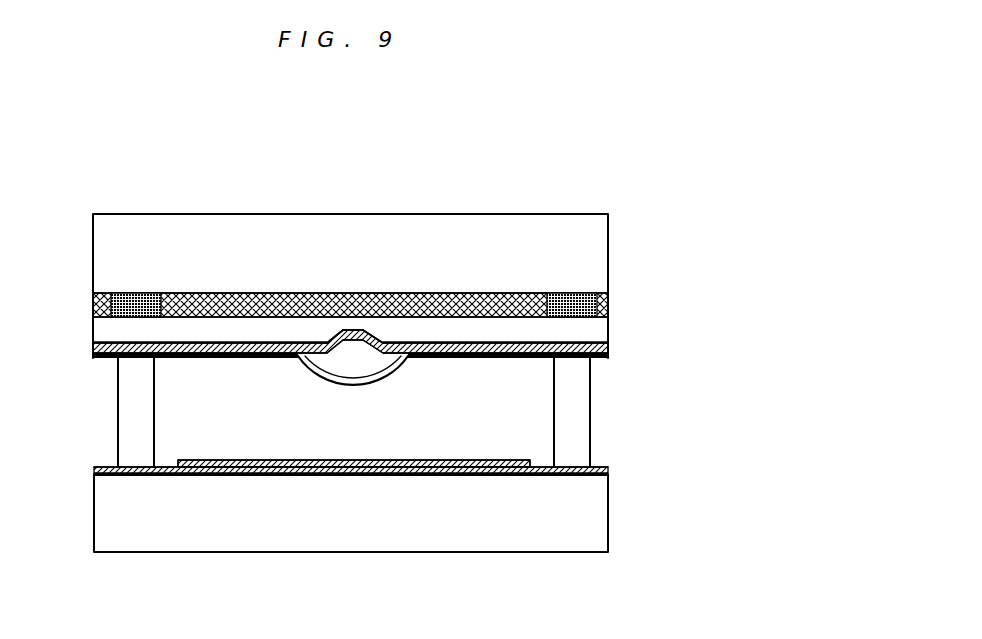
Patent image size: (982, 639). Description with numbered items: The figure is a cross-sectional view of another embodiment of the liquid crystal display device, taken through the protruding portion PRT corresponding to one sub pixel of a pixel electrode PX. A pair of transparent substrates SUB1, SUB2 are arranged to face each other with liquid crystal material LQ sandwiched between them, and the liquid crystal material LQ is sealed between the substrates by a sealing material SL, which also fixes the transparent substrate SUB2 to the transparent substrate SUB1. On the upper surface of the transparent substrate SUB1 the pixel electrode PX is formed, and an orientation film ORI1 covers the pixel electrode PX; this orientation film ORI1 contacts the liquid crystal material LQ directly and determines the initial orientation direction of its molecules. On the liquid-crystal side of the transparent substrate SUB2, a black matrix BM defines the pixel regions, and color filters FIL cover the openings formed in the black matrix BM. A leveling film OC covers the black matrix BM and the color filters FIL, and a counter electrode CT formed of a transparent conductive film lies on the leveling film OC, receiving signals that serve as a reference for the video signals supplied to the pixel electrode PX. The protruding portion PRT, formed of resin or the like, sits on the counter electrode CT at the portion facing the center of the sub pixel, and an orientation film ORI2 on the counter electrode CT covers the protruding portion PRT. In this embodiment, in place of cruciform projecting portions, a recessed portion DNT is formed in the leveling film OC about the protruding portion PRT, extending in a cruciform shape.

The transparent substrate SUB2 is at (138, 232).
The protruding portion PRT is at (345, 353).
The recessed portion DNT is at (377, 338).
The color filter FIL is at (492, 292).
The black matrix BM is at (575, 292).
The leveling film OC is at (593, 332).
The counter electrode CT is at (608, 347).
The orientation film ORI2 is at (608, 357).
The sealing material SL is at (575, 405).
The liquid crystal material LQ is at (468, 430).
The orientation film ORI1 is at (607, 468).
The pixel electrode PX is at (482, 473).
The transparent substrate SUB1 is at (587, 540).